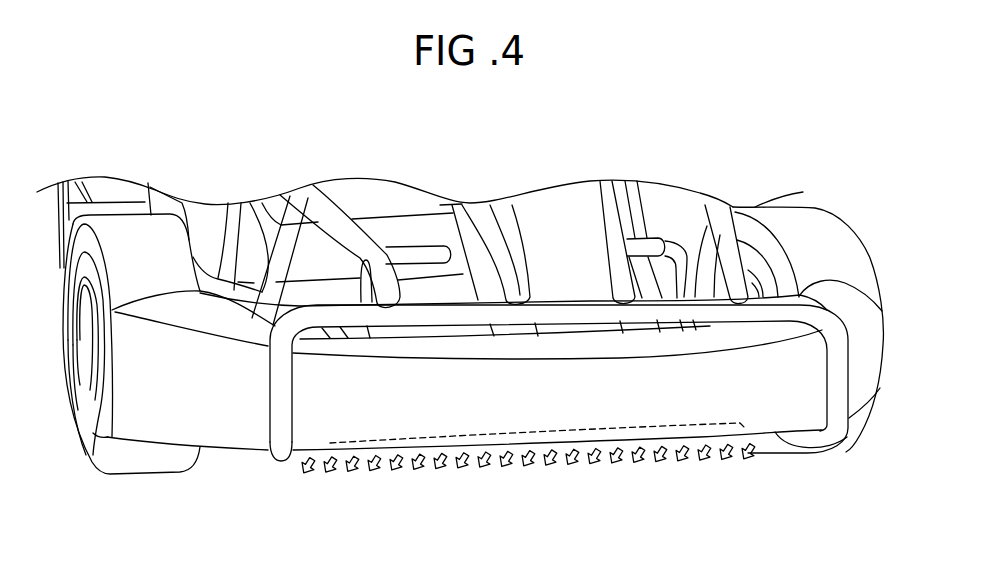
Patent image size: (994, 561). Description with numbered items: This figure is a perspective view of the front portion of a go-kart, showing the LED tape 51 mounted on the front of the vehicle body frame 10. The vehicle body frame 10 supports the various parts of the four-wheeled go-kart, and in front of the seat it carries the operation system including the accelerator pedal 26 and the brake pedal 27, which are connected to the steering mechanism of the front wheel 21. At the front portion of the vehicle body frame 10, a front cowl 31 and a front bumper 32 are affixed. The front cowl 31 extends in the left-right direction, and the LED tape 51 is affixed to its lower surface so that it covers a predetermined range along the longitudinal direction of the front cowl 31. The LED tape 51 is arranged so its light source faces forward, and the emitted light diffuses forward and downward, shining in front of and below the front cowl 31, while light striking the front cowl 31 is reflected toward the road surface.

The vehicle body frame 10 is at (233, 293).
The front wheel 21 is at (117, 268).
The accelerator pedal 26 is at (410, 248).
The brake pedal 27 is at (643, 246).
The front cowl 31 is at (231, 405).
The front bumper 32 is at (840, 370).
The LED tape 51 is at (330, 444).